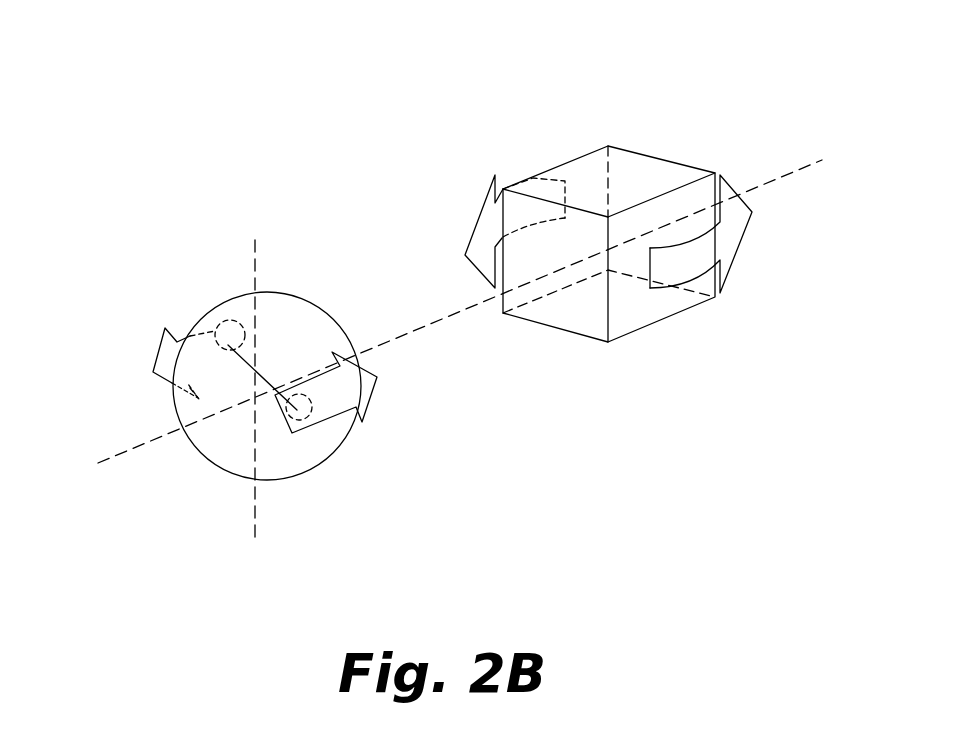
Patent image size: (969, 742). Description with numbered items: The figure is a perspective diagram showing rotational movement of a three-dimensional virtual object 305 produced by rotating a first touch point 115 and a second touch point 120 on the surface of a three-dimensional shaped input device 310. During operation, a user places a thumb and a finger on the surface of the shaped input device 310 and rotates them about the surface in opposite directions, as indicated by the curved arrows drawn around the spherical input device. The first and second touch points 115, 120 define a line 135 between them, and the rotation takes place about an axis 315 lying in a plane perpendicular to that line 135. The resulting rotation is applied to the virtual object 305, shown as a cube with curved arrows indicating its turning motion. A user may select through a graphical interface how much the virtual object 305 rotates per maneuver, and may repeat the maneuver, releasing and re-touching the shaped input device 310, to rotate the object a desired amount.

The 3D virtual object 305 is at (533, 157).
The 3D shaped input device 310 is at (194, 280).
The axis 315 is at (253, 515).
The line 135 is at (173, 385).
The second touch point 120 is at (226, 340).
The first touch point 115 is at (172, 383).